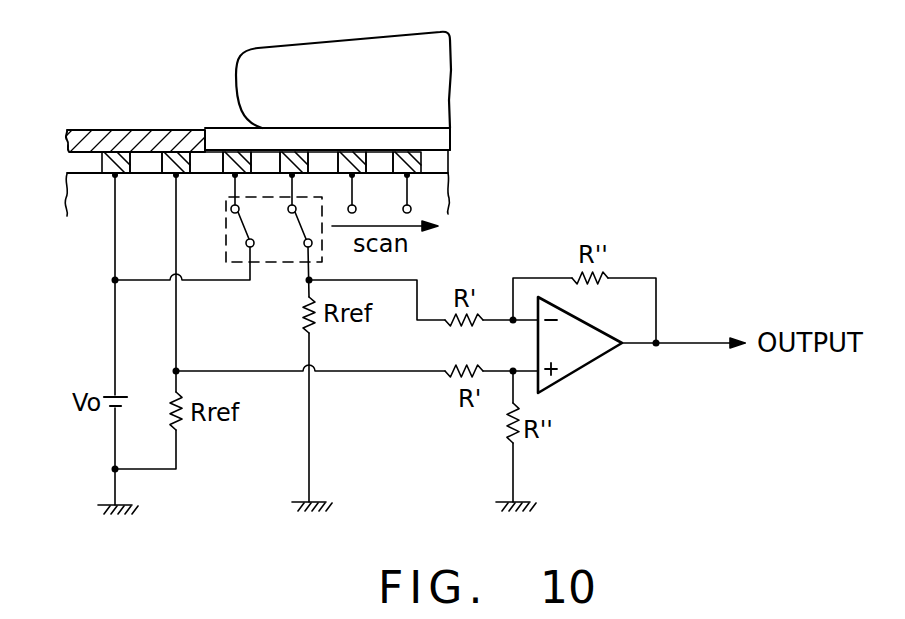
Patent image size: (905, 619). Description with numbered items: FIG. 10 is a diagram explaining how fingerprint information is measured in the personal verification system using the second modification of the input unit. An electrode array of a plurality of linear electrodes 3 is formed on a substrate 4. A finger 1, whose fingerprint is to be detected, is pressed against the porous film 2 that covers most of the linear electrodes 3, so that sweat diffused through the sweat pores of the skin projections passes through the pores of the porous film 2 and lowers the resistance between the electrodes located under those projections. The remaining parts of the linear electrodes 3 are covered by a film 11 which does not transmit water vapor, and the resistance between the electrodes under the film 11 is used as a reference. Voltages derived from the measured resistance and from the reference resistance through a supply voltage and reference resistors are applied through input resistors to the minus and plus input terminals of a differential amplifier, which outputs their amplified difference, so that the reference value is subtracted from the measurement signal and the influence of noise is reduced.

The finger 1 is at (437, 80).
The porous film 2 is at (440, 136).
The linear electrodes 3 is at (425, 161).
The substrate 4 is at (437, 200).
The film which does not transmit water vapor 11 is at (124, 144).